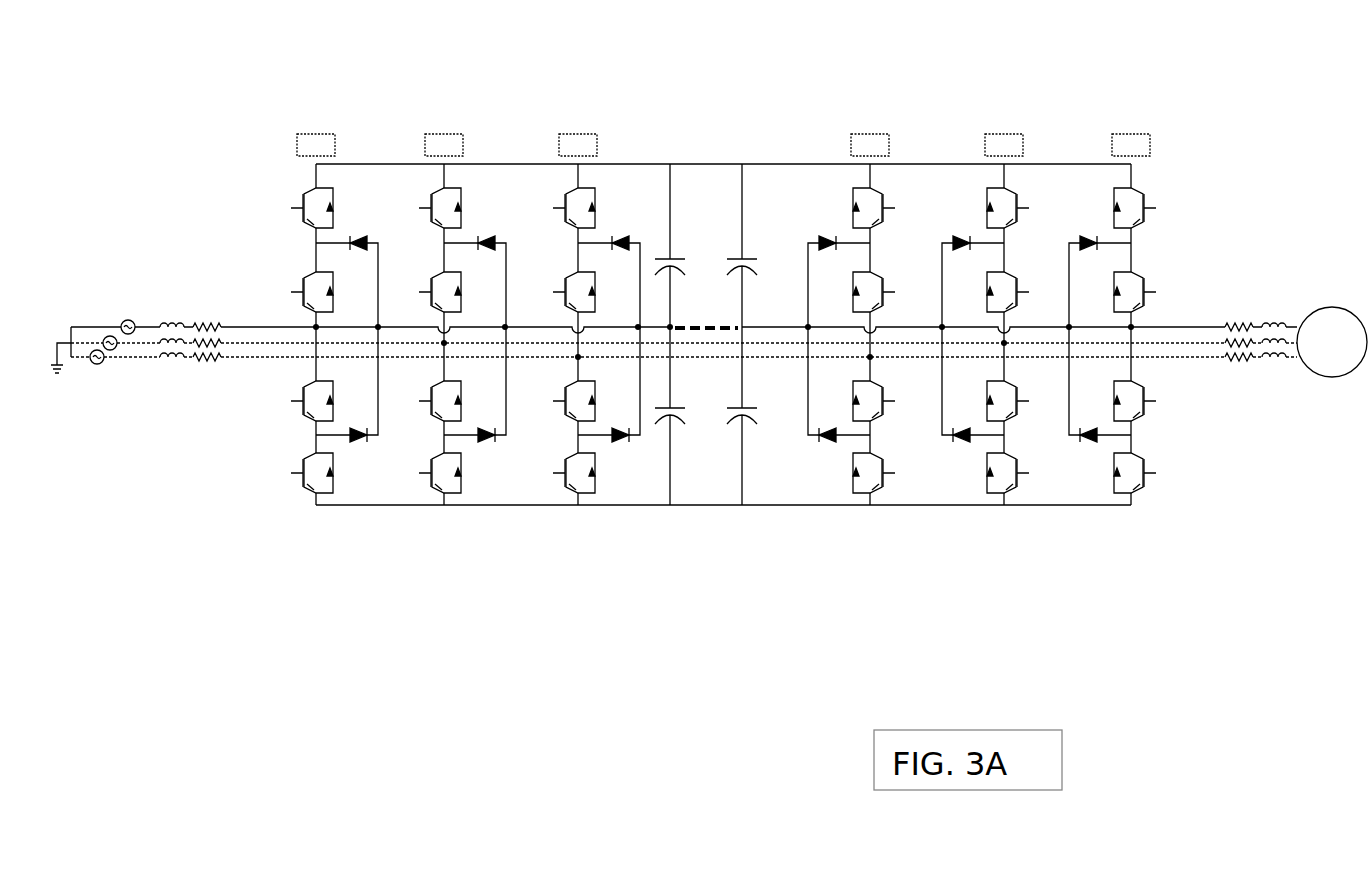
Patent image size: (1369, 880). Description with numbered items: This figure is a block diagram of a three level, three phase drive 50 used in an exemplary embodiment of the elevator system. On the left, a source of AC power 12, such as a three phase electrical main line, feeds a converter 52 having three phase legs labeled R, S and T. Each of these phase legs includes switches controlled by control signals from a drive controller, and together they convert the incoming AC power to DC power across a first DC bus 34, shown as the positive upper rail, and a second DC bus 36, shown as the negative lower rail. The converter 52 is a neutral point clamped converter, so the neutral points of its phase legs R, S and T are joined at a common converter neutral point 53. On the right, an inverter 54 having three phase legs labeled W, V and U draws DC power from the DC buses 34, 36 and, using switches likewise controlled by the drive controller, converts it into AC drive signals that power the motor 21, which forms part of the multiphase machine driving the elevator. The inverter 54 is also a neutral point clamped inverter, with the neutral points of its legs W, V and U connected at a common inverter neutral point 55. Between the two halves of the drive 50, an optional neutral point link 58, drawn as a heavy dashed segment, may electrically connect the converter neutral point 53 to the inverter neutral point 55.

The source of AC power 12 is at (100, 328).
The motor 21 is at (1300, 324).
The first DC bus 34 is at (380, 165).
The second DC bus 36 is at (683, 500).
The drive 50 is at (712, 45).
The converter 52 is at (507, 550).
The converter neutral point 53 is at (540, 326).
The inverter 54 is at (958, 557).
The inverter neutral point 55 is at (925, 326).
The neutral point link 58 is at (718, 326).